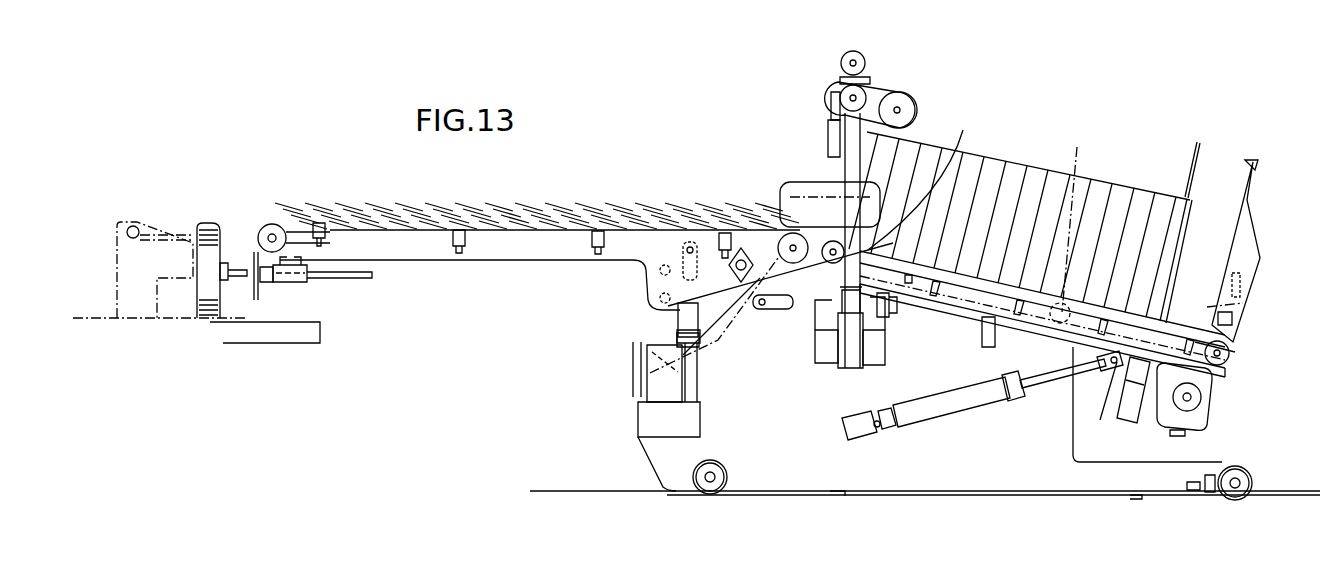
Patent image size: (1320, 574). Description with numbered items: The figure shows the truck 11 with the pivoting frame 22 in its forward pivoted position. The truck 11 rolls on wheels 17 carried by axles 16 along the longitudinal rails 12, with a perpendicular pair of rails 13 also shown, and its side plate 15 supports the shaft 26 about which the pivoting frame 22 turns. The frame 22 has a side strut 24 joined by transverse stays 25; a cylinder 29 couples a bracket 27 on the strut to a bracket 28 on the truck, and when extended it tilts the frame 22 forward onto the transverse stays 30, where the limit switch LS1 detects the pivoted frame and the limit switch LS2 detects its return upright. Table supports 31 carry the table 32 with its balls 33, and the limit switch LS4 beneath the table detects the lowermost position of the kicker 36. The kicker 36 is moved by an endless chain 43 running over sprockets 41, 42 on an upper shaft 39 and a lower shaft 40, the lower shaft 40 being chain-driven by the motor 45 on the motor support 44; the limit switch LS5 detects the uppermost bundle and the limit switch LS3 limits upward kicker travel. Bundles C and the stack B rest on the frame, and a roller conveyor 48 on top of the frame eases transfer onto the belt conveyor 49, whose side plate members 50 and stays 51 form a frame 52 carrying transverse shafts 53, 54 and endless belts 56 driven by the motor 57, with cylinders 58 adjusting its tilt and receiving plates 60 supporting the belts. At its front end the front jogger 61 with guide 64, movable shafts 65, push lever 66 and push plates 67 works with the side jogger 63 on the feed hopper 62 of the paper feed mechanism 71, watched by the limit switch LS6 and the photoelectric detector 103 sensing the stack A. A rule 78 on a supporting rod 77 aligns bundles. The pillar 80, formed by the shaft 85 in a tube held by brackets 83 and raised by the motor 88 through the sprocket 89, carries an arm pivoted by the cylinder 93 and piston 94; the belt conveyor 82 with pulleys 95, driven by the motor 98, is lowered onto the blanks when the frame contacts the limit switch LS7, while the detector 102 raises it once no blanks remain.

The truck 11 is at (650, 470).
The longitudinal rails 12 is at (565, 494).
The rails 13 is at (837, 496).
The side plate 15 is at (1015, 496).
The axles 16 is at (705, 484).
The wheels 17 is at (714, 492).
The pivoting frame 22 is at (1058, 335).
The side strut 24 is at (965, 308).
The transverse stays 25 is at (1105, 372).
The shaft 26 is at (1067, 231).
The bracket 27 is at (1112, 378).
The bracket 28 is at (840, 438).
The cylinder 29 is at (945, 412).
The transverse stays 30 is at (884, 366).
The table supports 31 is at (1250, 235).
The table 32 is at (1260, 171).
The balls 33 is at (1247, 180).
The kicker 36 is at (1180, 222).
The upper shaft 39 is at (831, 263).
The lower shaft 40 is at (1226, 362).
The sprocket 41 is at (793, 263).
The sprocket 42 is at (1230, 346).
The endless chain 43 is at (1040, 335).
The motor support 44 is at (1133, 423).
The motor 45 is at (1213, 420).
The roller conveyor 48 is at (777, 230).
The belt conveyor 49 is at (342, 228).
The side plate members 50 is at (540, 246).
The stays 51 is at (462, 247).
The frame 52 is at (437, 261).
The transverse shaft 53 is at (708, 248).
The transverse shaft 54 is at (272, 232).
The endless belts 56 is at (615, 230).
The motor 57 is at (633, 378).
The cylinders 58 is at (678, 318).
The receiving plates 60 is at (378, 226).
The front jogger 61 is at (293, 284).
The feed hopper 62 is at (88, 315).
The side jogger 63 is at (148, 236).
The guide 64 is at (312, 282).
The longitudinal movable shafts 65 is at (371, 279).
The transverse push lever 66 is at (266, 283).
The push plates 67 is at (257, 283).
The paper feed mechanism 71 is at (117, 233).
The supporting rod 77 is at (790, 220).
The rule 78 is at (840, 185).
The pillar 80 is at (833, 147).
The belt conveyor 82 is at (880, 80).
The brackets 83 is at (816, 325).
The shaft 85 is at (843, 87).
The motor 88 is at (805, 330).
The sprocket 89 is at (845, 290).
The cylinder 93 is at (836, 112).
The piston 94 is at (838, 92).
The pulleys 95 is at (898, 100).
The motor 98 is at (851, 54).
The detector 102 is at (703, 247).
The photoelectric detector 103 is at (130, 226).
The stack of blanks A is at (190, 237).
The stack of blanks B is at (987, 151).
The bundles C is at (1035, 183).
The limit switch LS1 is at (900, 318).
The limit switch LS2 is at (1192, 492).
The limit switch LS3 is at (945, 290).
The limit switch LS4 is at (1260, 287).
The limit switch LS5 is at (836, 360).
The limit switch LS6 is at (308, 226).
The limit switch LS7 is at (960, 153).